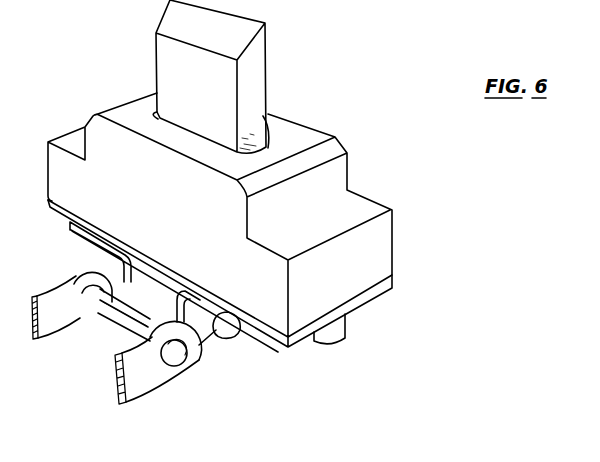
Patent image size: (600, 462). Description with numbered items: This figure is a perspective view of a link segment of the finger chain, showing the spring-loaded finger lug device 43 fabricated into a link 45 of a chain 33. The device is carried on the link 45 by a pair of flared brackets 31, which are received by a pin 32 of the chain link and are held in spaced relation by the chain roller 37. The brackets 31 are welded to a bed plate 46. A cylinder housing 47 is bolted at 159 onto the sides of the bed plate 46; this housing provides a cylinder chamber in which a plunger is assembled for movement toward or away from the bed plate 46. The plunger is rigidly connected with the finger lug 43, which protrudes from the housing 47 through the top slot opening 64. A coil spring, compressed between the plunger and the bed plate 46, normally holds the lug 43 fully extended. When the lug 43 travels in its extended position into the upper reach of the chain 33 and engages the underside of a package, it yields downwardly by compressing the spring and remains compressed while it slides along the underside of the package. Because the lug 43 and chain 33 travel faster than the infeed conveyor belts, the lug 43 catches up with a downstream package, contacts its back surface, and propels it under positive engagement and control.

The finger lug 43 is at (258, 53).
The top slot opening 64 is at (263, 116).
The cylinder housing 47 is at (166, 193).
The bed plate 46 is at (372, 296).
The bolt 159 is at (335, 332).
The flared brackets 31 is at (83, 237).
The link 45 is at (47, 327).
The chain roller 37 is at (107, 322).
The chain 33 is at (156, 357).
The pin 32 is at (243, 338).